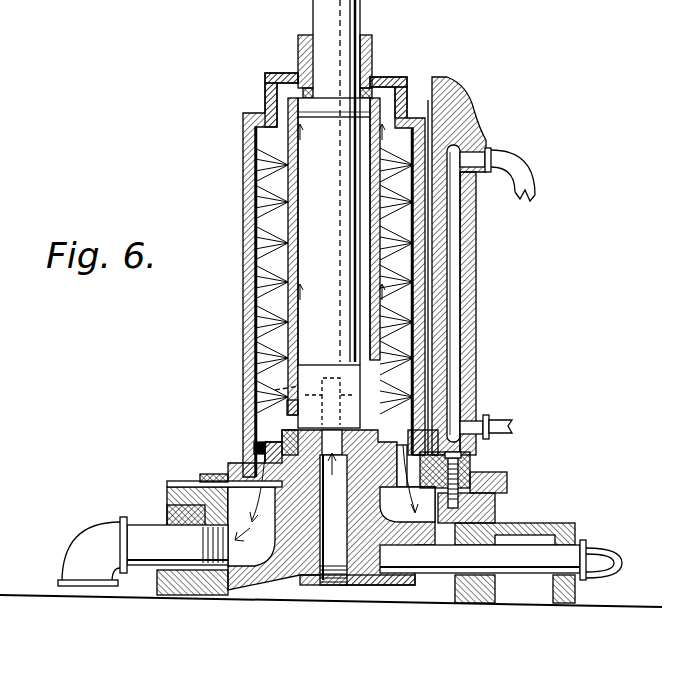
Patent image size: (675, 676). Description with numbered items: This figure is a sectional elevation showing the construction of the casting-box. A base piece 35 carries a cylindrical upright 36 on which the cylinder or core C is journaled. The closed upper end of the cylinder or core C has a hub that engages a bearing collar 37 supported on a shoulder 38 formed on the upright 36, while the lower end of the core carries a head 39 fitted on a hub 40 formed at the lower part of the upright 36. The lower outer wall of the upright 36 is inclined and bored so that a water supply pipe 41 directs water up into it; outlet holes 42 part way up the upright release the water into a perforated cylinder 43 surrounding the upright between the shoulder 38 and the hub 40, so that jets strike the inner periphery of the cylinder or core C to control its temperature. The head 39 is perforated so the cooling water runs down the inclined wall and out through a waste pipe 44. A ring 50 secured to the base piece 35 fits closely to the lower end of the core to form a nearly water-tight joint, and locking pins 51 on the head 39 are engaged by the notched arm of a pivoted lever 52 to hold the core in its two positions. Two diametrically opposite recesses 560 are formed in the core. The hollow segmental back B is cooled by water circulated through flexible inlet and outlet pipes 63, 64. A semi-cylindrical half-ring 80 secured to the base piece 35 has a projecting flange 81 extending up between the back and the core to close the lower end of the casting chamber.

The base piece 35 is at (168, 503).
The cylindrical upright 36 is at (327, 188).
The bearing collar 37 is at (265, 73).
The shoulder 38 is at (318, 104).
The head 39 is at (262, 470).
The hub 40 is at (283, 438).
The water supply pipe 41 is at (550, 557).
The outlet holes 42 is at (452, 354).
The perforated cylinder 43 is at (382, 163).
The waste pipe 44 is at (162, 547).
The ring 50 is at (208, 476).
The locking pins 51 is at (380, 503).
The pivoted lever 52 is at (195, 481).
The inlet pipe 63 is at (495, 427).
The outlet pipe 64 is at (522, 192).
The half-ring 80 is at (407, 471).
The flange 81 is at (470, 476).
The recesses 560 is at (265, 103).
The segmental back B is at (472, 303).
The cylinder or core C is at (242, 307).